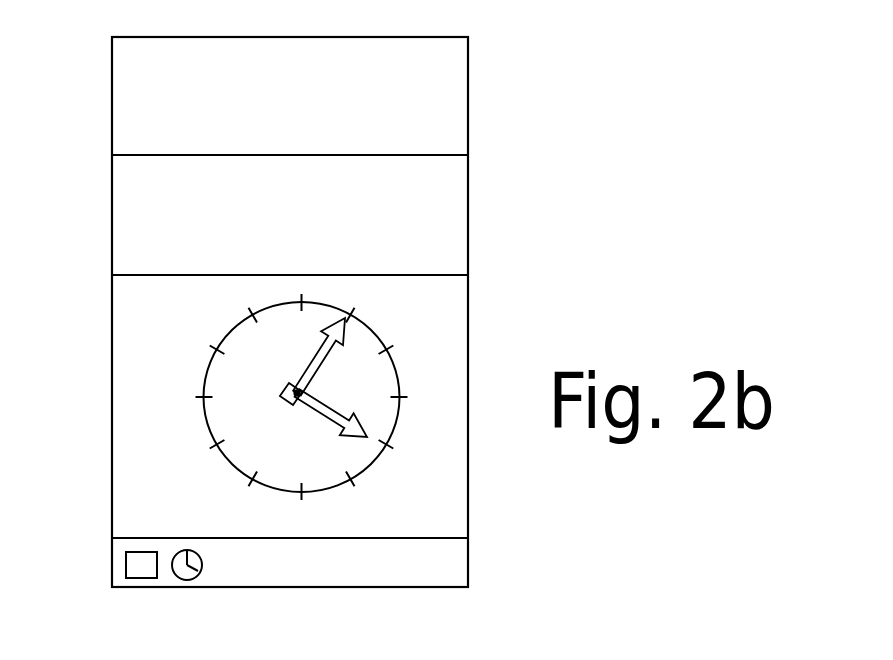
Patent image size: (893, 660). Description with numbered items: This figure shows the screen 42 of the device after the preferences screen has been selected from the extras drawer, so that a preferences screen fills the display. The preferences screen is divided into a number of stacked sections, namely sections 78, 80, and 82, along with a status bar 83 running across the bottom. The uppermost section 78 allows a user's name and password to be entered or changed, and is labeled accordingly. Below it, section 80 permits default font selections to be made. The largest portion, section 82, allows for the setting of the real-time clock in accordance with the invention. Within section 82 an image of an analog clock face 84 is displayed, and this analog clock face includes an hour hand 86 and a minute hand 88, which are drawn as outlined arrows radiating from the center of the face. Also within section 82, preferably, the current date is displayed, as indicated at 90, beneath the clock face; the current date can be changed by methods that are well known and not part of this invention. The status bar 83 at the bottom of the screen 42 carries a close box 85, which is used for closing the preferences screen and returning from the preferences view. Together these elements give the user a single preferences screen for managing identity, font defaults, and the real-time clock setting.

The screen 42 is at (522, 78).
The section 78 is at (113, 122).
The section 80 is at (115, 225).
The section 82 is at (118, 395).
The status bar 83 is at (117, 565).
The analog clock face 84 is at (370, 467).
The close box 85 is at (146, 574).
The hour hand 86 is at (326, 415).
The minute hand 88 is at (316, 357).
The current date display 90 is at (168, 490).